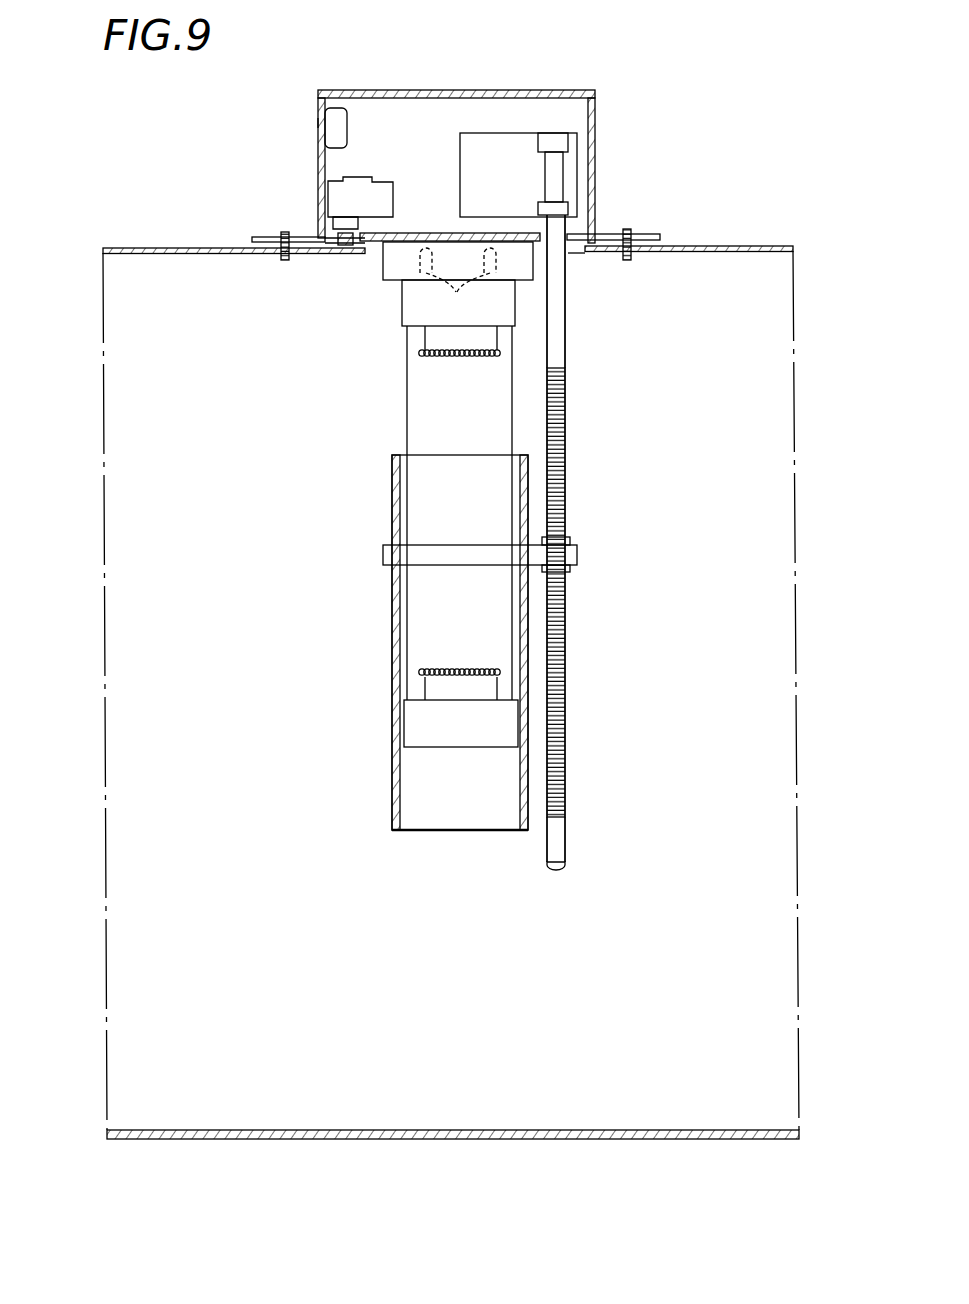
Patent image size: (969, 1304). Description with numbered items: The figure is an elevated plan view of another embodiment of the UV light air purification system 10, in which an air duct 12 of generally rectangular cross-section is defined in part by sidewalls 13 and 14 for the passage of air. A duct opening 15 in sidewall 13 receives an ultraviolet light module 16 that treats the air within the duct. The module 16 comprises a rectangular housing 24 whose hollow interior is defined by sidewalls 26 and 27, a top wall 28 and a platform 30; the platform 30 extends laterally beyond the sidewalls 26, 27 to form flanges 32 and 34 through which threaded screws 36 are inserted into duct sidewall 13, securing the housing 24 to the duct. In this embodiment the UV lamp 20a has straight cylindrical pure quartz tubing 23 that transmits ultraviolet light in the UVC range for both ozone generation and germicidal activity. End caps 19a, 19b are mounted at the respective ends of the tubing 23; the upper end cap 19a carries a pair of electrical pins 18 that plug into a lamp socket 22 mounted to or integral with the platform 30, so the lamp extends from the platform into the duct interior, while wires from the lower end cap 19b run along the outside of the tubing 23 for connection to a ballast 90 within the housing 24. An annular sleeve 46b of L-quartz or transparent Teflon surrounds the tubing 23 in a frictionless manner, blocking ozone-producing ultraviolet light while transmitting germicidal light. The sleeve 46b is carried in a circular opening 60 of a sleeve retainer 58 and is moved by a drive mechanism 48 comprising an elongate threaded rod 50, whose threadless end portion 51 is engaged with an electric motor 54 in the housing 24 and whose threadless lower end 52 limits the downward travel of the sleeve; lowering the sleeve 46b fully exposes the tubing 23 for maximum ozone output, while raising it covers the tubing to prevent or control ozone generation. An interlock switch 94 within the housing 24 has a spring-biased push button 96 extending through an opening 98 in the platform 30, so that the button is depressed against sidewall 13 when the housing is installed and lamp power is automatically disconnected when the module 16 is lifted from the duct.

The UV light air purification system 10 is at (160, 154).
The air duct 12 is at (183, 469).
The sidewall 13 is at (137, 247).
The sidewall 14 is at (238, 1130).
The duct opening 15 is at (574, 250).
The ultraviolet light module 16 is at (718, 128).
The electrical pins 18 is at (459, 474).
The end cap 19a is at (402, 300).
The end cap 19b is at (408, 712).
The UV lamp 20a is at (403, 408).
The lamp socket 22 is at (383, 262).
The straight tubing 23 is at (400, 650).
The housing 24 is at (316, 123).
The sidewall 26 is at (322, 178).
The sidewall 27 is at (596, 115).
The top wall 28 is at (440, 90).
The platform 30 is at (430, 240).
The flange 32 is at (262, 237).
The flange 34 is at (662, 234).
The threaded screws 36 is at (285, 232).
The annular sleeve 46b is at (398, 620).
The drive mechanism 48 is at (612, 542).
The threaded rod 50 is at (562, 395).
The threadless end portion 51 is at (557, 318).
The lower end 52 is at (560, 835).
The electric motor 54 is at (513, 133).
The sleeve retainer 58 is at (455, 553).
The circular opening 60 is at (546, 540).
The ballast 90 is at (335, 118).
The interlock switch 94 is at (372, 185).
The push button 96 is at (352, 250).
The opening 98 is at (360, 233).